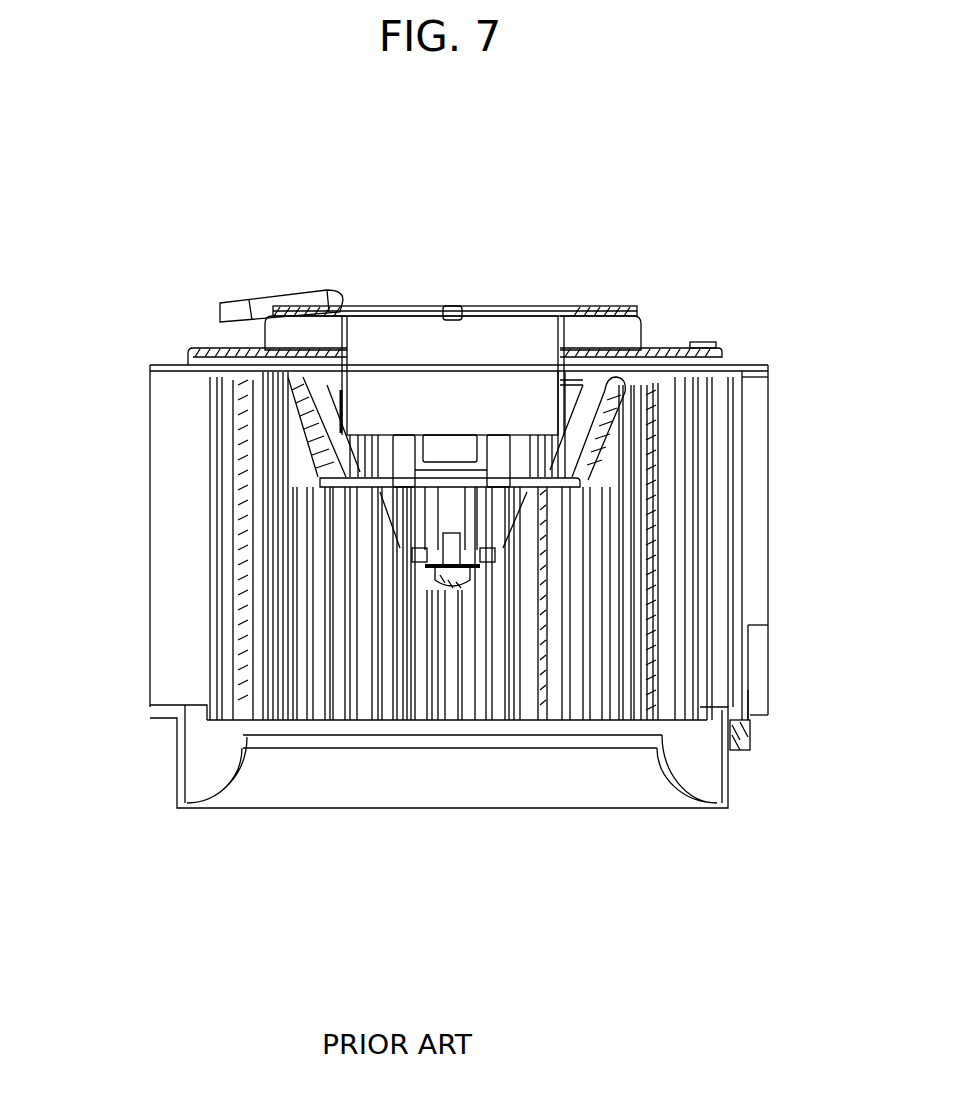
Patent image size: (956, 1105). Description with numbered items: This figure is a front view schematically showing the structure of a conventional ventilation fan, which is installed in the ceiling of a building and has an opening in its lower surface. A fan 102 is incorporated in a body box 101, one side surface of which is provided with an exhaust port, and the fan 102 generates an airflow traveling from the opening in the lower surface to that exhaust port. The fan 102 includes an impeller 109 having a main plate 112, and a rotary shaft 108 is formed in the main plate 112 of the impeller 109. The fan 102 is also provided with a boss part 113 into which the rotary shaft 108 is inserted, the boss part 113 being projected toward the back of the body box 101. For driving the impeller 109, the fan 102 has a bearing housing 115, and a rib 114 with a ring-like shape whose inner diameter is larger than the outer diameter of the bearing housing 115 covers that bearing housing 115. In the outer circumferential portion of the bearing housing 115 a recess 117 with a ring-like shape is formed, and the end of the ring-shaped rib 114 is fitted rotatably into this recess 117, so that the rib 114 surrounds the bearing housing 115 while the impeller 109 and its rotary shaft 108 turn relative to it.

The body box 101 is at (623, 315).
The fan 102 is at (428, 313).
The rotary shaft 108 is at (447, 522).
The impeller 109 is at (265, 665).
The main plate 112 is at (523, 478).
The boss part 113 is at (432, 568).
The rib 114 is at (420, 540).
The bearing housing 115 is at (440, 445).
The recess 117 is at (500, 452).